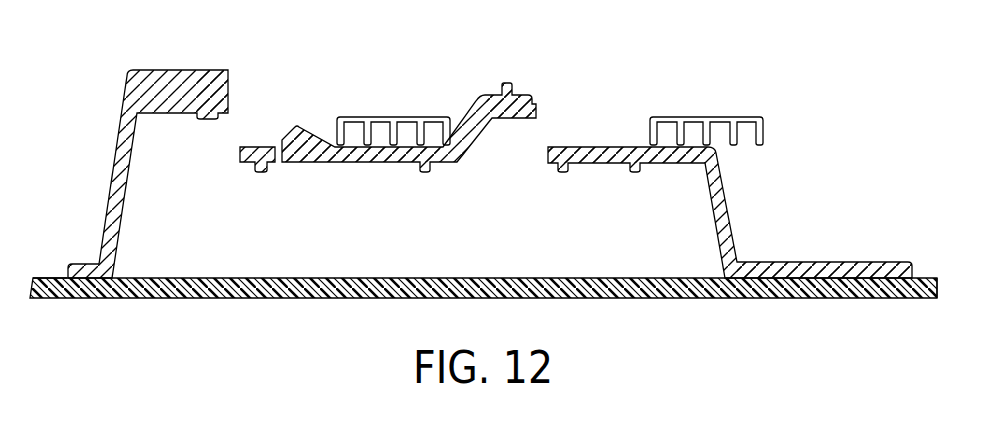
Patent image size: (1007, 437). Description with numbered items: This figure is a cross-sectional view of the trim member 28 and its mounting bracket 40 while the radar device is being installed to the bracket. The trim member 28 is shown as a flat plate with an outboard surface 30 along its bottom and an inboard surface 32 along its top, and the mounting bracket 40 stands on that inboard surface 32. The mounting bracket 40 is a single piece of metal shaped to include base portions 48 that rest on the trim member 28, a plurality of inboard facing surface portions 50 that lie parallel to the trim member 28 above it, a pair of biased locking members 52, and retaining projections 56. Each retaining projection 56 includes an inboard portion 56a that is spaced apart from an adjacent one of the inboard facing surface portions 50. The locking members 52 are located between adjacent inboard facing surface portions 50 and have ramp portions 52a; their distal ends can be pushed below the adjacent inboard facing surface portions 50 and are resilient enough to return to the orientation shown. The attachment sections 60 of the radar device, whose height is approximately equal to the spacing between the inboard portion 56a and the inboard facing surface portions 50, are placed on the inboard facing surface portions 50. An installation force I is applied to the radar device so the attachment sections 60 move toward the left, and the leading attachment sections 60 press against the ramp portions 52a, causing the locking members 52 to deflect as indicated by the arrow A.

The trim member 28 is at (46, 270).
The outboard surface 30 is at (777, 298).
The inboard surface 32 is at (928, 278).
The mounting bracket 40 is at (732, 191).
The base portions 48 is at (825, 262).
The inboard facing surface portions 50 is at (258, 147).
The biased locking members 52 is at (305, 147).
The ramp portions 52a is at (318, 138).
The retaining projections 56 is at (192, 92).
The inboard portion 56a is at (230, 83).
The attachment sections 60 is at (410, 117).
The arrow A is at (338, 217).
The installation force I is at (786, 132).